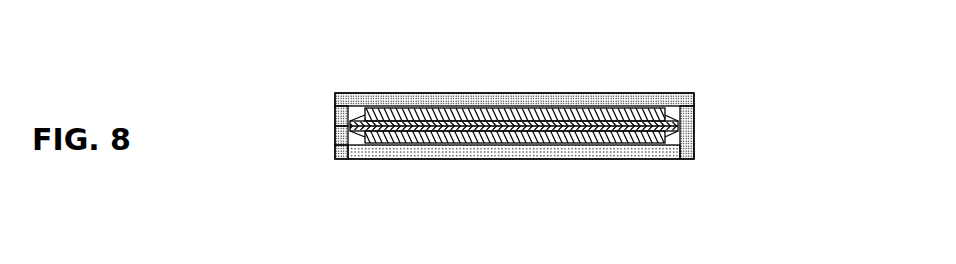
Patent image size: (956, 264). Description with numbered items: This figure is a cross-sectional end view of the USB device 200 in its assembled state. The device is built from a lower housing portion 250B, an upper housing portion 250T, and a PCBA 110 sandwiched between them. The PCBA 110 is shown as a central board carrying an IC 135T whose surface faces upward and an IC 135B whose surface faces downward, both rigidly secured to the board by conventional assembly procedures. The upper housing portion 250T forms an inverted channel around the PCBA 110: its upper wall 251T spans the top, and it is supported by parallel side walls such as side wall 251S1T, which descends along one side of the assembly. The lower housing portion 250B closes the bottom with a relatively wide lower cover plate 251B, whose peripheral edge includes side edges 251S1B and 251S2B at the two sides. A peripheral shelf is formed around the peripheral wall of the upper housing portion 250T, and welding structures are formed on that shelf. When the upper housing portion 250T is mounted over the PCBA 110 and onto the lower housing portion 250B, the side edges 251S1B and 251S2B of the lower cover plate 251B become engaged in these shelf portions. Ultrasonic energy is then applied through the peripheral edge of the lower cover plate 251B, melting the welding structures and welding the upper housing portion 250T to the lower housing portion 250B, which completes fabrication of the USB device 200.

The USB device 200 is at (299, 74).
The upper housing portion 250T is at (508, 88).
The lower housing portion 250B is at (545, 166).
The upper wall 251T is at (424, 93).
The lower cover plate 251B is at (588, 150).
The side wall 251S1T is at (335, 110).
The side edge 251S1B is at (352, 158).
The side edge 251S2B is at (680, 160).
The IC 135T is at (537, 113).
The IC 135B is at (497, 137).
The PCBA 110 is at (608, 123).